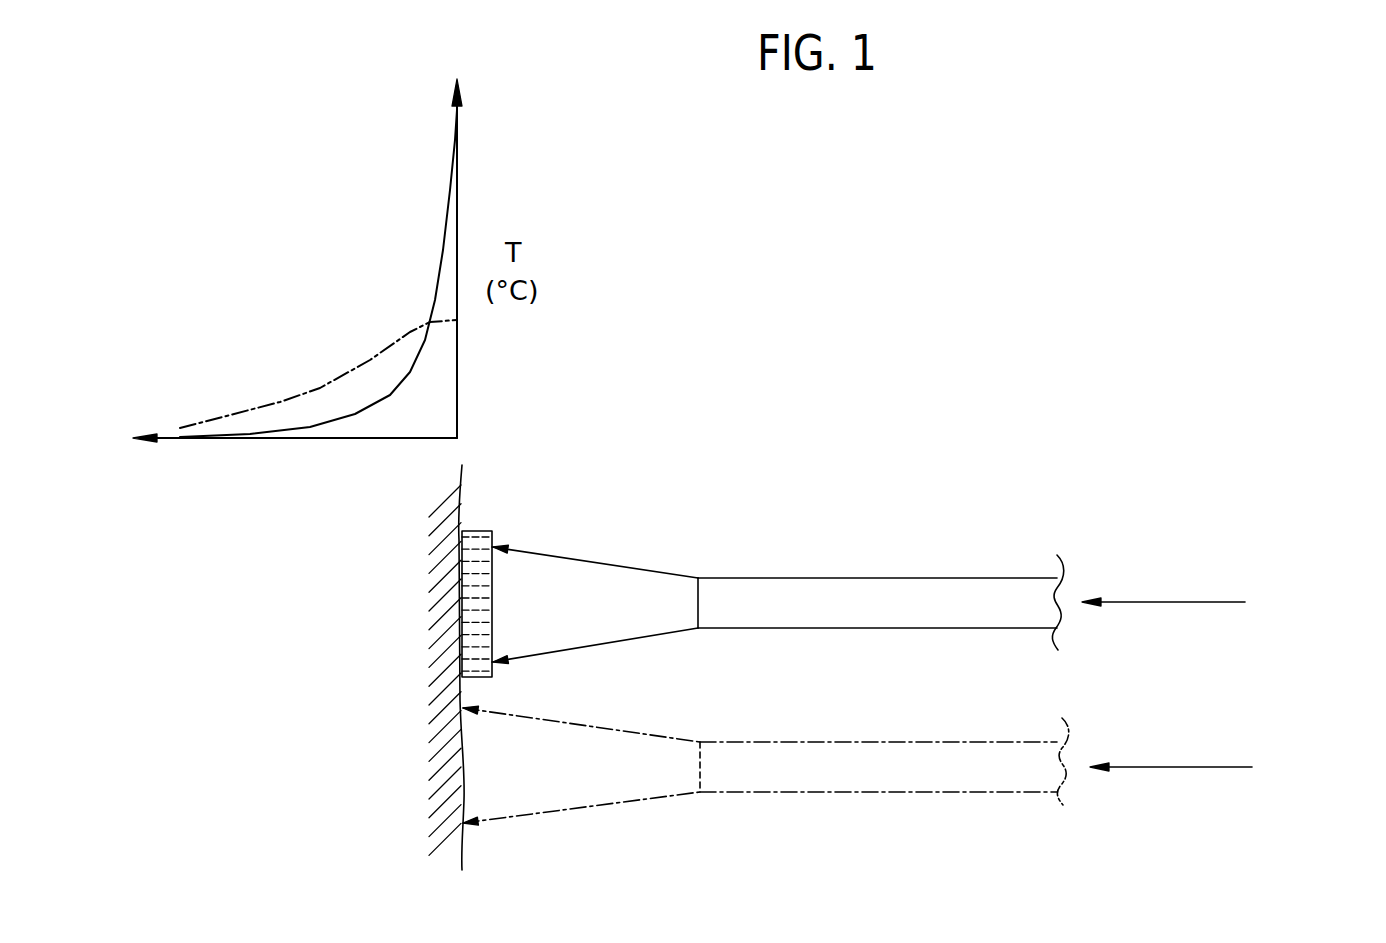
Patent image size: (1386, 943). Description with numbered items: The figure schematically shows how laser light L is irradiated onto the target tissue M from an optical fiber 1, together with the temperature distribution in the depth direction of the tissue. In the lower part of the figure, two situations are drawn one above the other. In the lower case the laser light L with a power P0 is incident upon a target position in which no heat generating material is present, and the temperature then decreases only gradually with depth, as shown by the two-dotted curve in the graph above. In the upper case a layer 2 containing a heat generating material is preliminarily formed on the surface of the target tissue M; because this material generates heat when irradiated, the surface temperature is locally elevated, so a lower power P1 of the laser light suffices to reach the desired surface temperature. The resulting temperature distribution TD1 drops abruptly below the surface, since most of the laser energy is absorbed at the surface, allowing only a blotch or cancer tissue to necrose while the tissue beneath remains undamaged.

The optical fiber 1 is at (900, 628).
The layer containing a heat generating material 2 is at (492, 602).
The laser light L is at (622, 563).
The target tissue M is at (463, 847).
The temperature distribution TD1 is at (320, 388).
The power of the laser light P1 is at (1232, 604).
The power of the laser light P0 is at (1191, 766).